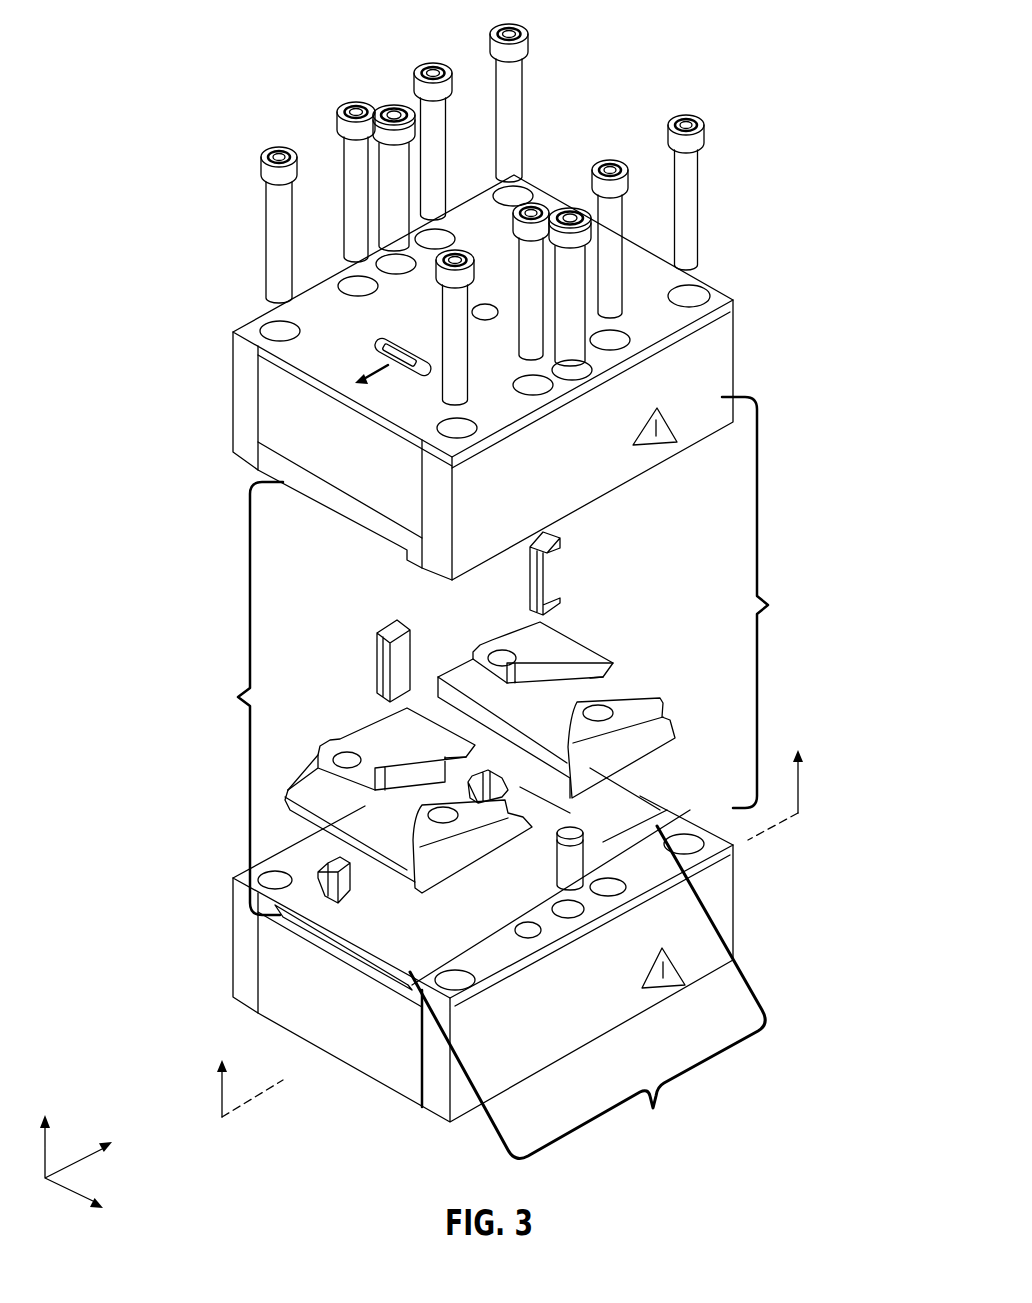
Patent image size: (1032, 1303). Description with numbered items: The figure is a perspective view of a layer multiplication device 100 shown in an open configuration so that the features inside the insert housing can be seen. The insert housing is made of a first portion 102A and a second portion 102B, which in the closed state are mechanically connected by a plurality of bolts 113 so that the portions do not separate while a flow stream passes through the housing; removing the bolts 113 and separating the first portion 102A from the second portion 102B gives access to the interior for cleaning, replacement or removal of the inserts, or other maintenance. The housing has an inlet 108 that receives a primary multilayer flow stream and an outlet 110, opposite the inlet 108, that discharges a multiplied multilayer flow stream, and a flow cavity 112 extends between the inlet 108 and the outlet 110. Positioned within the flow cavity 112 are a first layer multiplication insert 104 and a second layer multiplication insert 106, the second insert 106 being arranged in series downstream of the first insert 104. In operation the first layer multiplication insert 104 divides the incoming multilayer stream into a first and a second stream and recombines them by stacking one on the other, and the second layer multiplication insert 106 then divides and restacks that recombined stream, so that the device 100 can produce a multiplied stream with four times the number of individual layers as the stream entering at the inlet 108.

The layer multiplication device 100 is at (866, 74).
The first portion 102A is at (733, 335).
The second portion 102B is at (733, 878).
The first layer multiplication insert 104 is at (490, 642).
The second layer multiplication insert 106 is at (360, 735).
The inlet 108 is at (768, 602).
The outlet 110 is at (235, 698).
The flow cavity 112 is at (587, 992).
The bolts 113 is at (523, 72).